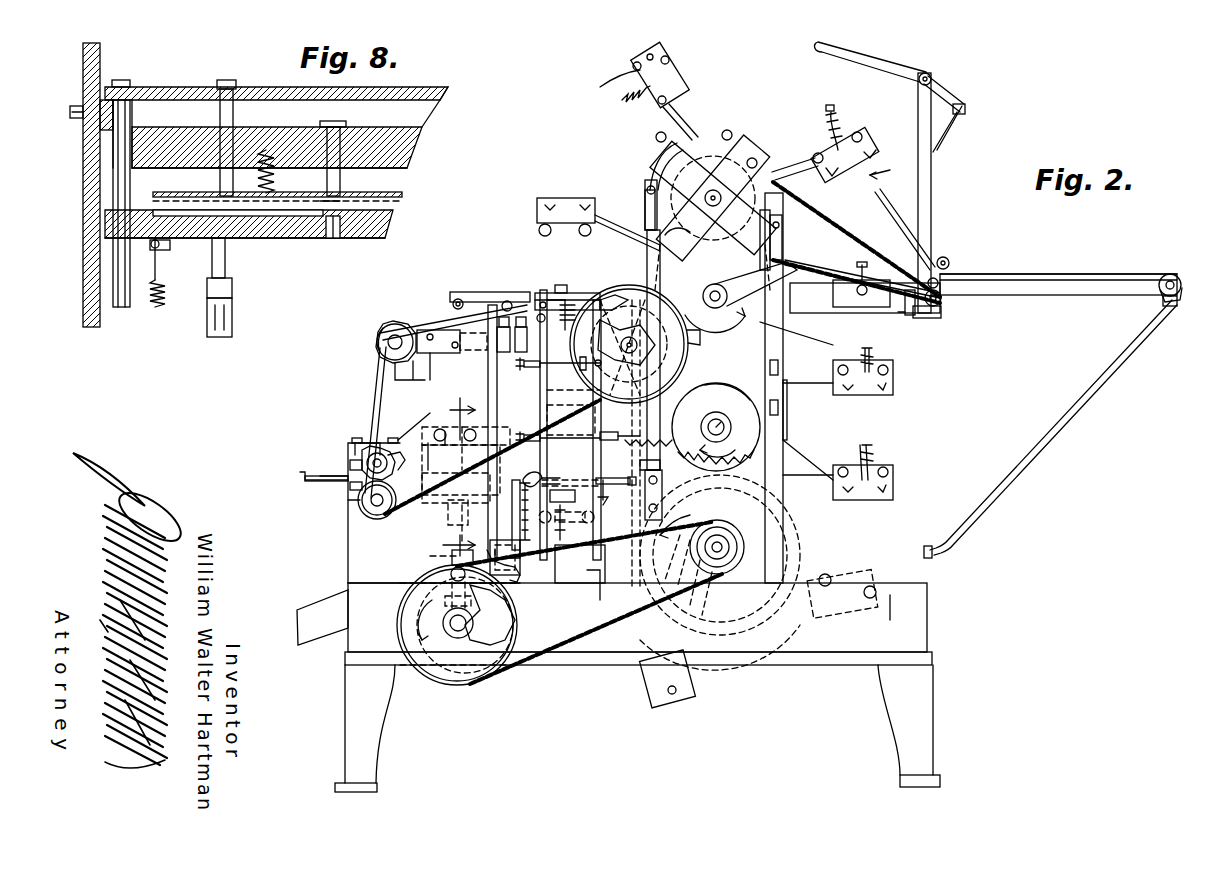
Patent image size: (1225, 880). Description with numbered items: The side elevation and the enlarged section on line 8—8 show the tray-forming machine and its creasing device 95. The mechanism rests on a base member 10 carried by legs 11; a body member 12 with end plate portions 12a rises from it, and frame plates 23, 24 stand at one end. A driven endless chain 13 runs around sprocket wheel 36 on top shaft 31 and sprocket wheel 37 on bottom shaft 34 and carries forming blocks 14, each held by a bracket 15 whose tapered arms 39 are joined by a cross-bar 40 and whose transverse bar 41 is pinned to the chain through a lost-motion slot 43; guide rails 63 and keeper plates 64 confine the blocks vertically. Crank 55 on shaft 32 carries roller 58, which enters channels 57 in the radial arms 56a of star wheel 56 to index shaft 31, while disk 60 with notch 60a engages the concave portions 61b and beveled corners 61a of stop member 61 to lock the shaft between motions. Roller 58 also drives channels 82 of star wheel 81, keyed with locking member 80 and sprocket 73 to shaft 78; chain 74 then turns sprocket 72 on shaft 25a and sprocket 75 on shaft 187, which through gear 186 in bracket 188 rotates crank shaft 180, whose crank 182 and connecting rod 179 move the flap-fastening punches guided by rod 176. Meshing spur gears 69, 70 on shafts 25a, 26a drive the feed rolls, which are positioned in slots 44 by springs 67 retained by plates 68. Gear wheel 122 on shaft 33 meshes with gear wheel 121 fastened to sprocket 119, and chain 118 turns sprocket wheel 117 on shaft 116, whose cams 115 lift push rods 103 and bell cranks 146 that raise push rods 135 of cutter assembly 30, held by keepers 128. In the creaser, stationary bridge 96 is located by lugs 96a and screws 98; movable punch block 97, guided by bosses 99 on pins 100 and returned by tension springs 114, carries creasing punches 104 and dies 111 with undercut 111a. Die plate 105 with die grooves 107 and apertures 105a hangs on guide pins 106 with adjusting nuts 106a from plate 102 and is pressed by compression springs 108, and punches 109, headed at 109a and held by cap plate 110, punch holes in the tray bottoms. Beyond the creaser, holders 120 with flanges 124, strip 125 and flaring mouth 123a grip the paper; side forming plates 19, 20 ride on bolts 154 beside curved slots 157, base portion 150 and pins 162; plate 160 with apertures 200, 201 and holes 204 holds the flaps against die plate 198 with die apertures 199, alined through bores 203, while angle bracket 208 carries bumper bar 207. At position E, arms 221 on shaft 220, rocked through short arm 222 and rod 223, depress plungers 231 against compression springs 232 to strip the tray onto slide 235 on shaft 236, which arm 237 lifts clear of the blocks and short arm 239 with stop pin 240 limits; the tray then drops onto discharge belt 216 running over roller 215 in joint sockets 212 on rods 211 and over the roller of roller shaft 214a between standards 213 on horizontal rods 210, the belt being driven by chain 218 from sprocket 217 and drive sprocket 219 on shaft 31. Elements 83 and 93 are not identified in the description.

In FIG. 8, the wall 23 is at (84, 236).
In FIG. 8, the top plate 102 is at (200, 86).
In FIG. 8, the side plate 96a is at (100, 125).
In FIG. 8, the bolt 98 is at (70, 112).
In FIG. 8, the heater block 96 is at (425, 134).
In FIG. 2, the heater block 96 is at (533, 445).
In FIG. 8, the heating unit 95 is at (415, 152).
In FIG. 2, the heating unit 95 is at (450, 505).
In FIG. 8, the plate end 110 is at (442, 99).
In FIG. 8, the rod head 106a is at (248, 73).
In FIG. 8, the rod 106 is at (222, 178).
In FIG. 8, the spring 108 is at (276, 178).
In FIG. 8, the rod head 109a is at (340, 122).
In FIG. 8, the rod 109 is at (342, 178).
In FIG. 8, the plate 105 is at (402, 193).
In FIG. 8, the plate edge 107 is at (404, 200).
In FIG. 8, the plate lip 105a is at (326, 201).
In FIG. 8, the lower block 104 is at (396, 212).
In FIG. 8, the lower block face 97 is at (388, 233).
In FIG. 8, the slot 111 is at (330, 239).
In FIG. 8, the slot wall 111a is at (336, 240).
In FIG. 8, the rod 103 is at (226, 260).
In FIG. 2, the rod 103 is at (430, 555).
In FIG. 8, the rods 100 is at (120, 310).
In FIG. 8, the rod 99 is at (156, 312).
In FIG. 8, the spring 114 is at (162, 310).
In FIG. 2, the frame 10 is at (915, 602).
In FIG. 2, the legs 11 is at (370, 735).
In FIG. 2, the side plate 24 is at (350, 568).
In FIG. 2, the chute 83 is at (305, 634).
In FIG. 2, the upright 12 is at (813, 413).
In FIG. 2, the upright bracket 12a is at (785, 393).
In FIG. 2, the bar 122 is at (786, 437).
In FIG. 2, the post 213 is at (933, 157).
In FIG. 2, the lever 221 is at (850, 45).
In FIG. 2, the pivot 220 is at (932, 74).
In FIG. 2, the link 222 is at (960, 98).
In FIG. 2, the link 223 is at (950, 125).
In FIG. 2, the rod 235 is at (880, 200).
In FIG. 2, the rod 237 is at (870, 268).
In FIG. 2, the chain 219 is at (785, 190).
In FIG. 2, the chain 60a is at (798, 244).
In FIG. 2, the bracket 61a is at (783, 224).
In FIG. 2, the pivot 240 is at (950, 262).
In FIG. 2, the pivot 239 is at (940, 280).
In FIG. 2, the pivot 236 is at (942, 295).
In FIG. 2, the block 214a is at (940, 315).
In FIG. 2, the bracket 217 is at (918, 300).
In FIG. 2, the bracket 218 is at (903, 310).
In FIG. 2, the arm 210 is at (1085, 298).
In FIG. 2, the arm top 216 is at (1135, 258).
In FIG. 2, the pulley 215 is at (1180, 274).
In FIG. 2, the bracket 212 is at (1170, 306).
In FIG. 2, the brace 211 is at (1062, 457).
In FIG. 2, the cross head 13 is at (700, 128).
In FIG. 2, the cam 36 is at (722, 140).
In FIG. 2, the pin 43 is at (730, 132).
In FIG. 2, the shaft 41 is at (755, 150).
In FIG. 2, the pin 31 is at (755, 160).
In FIG. 2, the link 56 is at (655, 150).
In FIG. 2, the link 61 is at (645, 172).
In FIG. 2, the link 56a is at (650, 198).
In FIG. 2, the arm 61b is at (694, 241).
In FIG. 2, the rods 57 is at (712, 267).
In FIG. 2, the bar 58 is at (760, 243).
In FIG. 2, the bracket 198 is at (660, 57).
In FIG. 2, the bracket 199 is at (665, 90).
In FIG. 2, the bolt 203 is at (618, 100).
In FIG. 2, the bracket 14 is at (536, 210).
In FIG. 2, the bolt 15 is at (780, 580).
In FIG. 2, the bracket 40 is at (866, 362).
In FIG. 2, the bolt 231 is at (870, 455).
In FIG. 2, the bracket 232 is at (832, 142).
In FIG. 2, the direction E is at (886, 170).
In FIG. 2, the chain 60 is at (810, 352).
In FIG. 2, the bar 39 is at (822, 476).
In FIG. 2, the wheel 121 is at (800, 542).
In FIG. 2, the wheel 37 is at (735, 680).
In FIG. 2, the wheel 73 is at (690, 358).
In FIG. 2, the hub 78 is at (620, 346).
In FIG. 2, the cam 80 is at (629, 341).
In FIG. 2, the spokes 81 is at (660, 315).
In FIG. 2, the shaft 32 is at (713, 307).
In FIG. 2, the arm 55 is at (732, 300).
In FIG. 2, the gear 82 is at (735, 382).
In FIG. 2, the gear 63 is at (665, 420).
In FIG. 2, the shaft 33 is at (726, 422).
In FIG. 2, the rotation 64 is at (708, 425).
In FIG. 2, the sprocket 34 is at (743, 535).
In FIG. 2, the arm 119 is at (700, 550).
In FIG. 2, the pulley 117 is at (462, 672).
In FIG. 2, the belt 118 is at (533, 678).
In FIG. 2, the gear 116 is at (474, 626).
In FIG. 2, the gear 115 is at (460, 611).
In FIG. 2, the hook 146 is at (525, 580).
In FIG. 2, the bracket 135 is at (532, 572).
In FIG. 2, the housing 150 is at (590, 578).
In FIG. 2, the sprocket 75 is at (378, 349).
In FIG. 2, the chain 74 is at (376, 372).
In FIG. 2, the arm 186 is at (405, 328).
In FIG. 2, the bracket 187 is at (383, 333).
In FIG. 2, the bracket 188 is at (432, 365).
In FIG. 2, the bracket 180 is at (460, 360).
In FIG. 2, the plate 182 is at (490, 345).
In FIG. 2, the clamps 179 is at (497, 330).
In FIG. 2, the bracket 176 is at (466, 290).
In FIG. 2, the bracket 200 is at (537, 293).
In FIG. 2, the pin 204 is at (537, 315).
In FIG. 2, the stud 201 is at (553, 288).
In FIG. 2, the spring 207 is at (565, 290).
In FIG. 2, the plate 160 is at (556, 298).
In FIG. 2, the pawl 208 is at (605, 298).
In FIG. 2, the bolt 154 is at (532, 368).
In FIG. 2, the rod 157 is at (540, 390).
In FIG. 2, the plate 20 is at (538, 404).
In FIG. 2, the spring 19 is at (625, 450).
In FIG. 2, the block 162 is at (608, 455).
In FIG. 2, the bar 125 is at (616, 473).
In FIG. 2, the fork 123a is at (545, 470).
In FIG. 2, the bracket 124 is at (566, 514).
In FIG. 2, the rod 120 is at (614, 497).
In FIG. 2, the plate 128 is at (532, 488).
In FIG. 2, the rack 30 is at (530, 515).
In FIG. 2, the section line 8 is at (451, 477).
In FIG. 2, the arm 67 is at (380, 442).
In FIG. 2, the arm 68 is at (372, 445).
In FIG. 2, the sprocket 70 is at (366, 456).
In FIG. 2, the pawl 44 is at (399, 463).
In FIG. 2, the bar 93 is at (305, 476).
In FIG. 2, the block 26a is at (350, 465).
In FIG. 2, the block 25a is at (350, 488).
In FIG. 2, the bracket 69 is at (348, 504).
In FIG. 2, the sprocket 72 is at (368, 512).